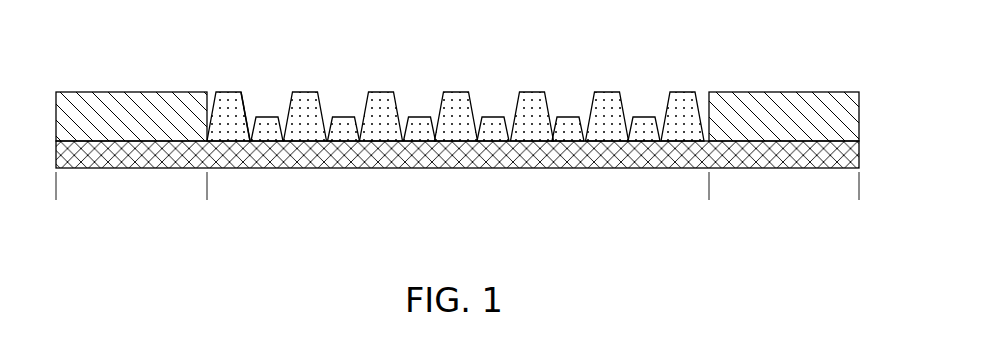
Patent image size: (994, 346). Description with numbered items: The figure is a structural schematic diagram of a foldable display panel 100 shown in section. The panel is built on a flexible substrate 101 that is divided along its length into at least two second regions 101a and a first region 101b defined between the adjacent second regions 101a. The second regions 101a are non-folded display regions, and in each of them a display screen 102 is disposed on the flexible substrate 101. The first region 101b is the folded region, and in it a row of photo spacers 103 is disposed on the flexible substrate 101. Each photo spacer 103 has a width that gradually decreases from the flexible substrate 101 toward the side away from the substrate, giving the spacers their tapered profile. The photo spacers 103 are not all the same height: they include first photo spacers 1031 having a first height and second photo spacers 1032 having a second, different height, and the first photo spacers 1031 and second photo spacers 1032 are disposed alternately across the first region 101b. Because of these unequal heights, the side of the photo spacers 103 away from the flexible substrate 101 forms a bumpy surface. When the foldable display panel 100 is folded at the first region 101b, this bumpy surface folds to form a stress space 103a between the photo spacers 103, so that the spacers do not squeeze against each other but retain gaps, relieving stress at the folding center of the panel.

The foldable display panel 100 is at (84, 38).
The flexible substrate 101 is at (853, 148).
The second regions 101a is at (207, 187).
The first region 101b is at (709, 187).
The display screens 102 is at (853, 111).
The photo spacers 103 is at (464, 74).
The first photo spacers 1031 is at (683, 106).
The second photo spacers 1032 is at (640, 117).
The stress space 103a is at (261, 103).